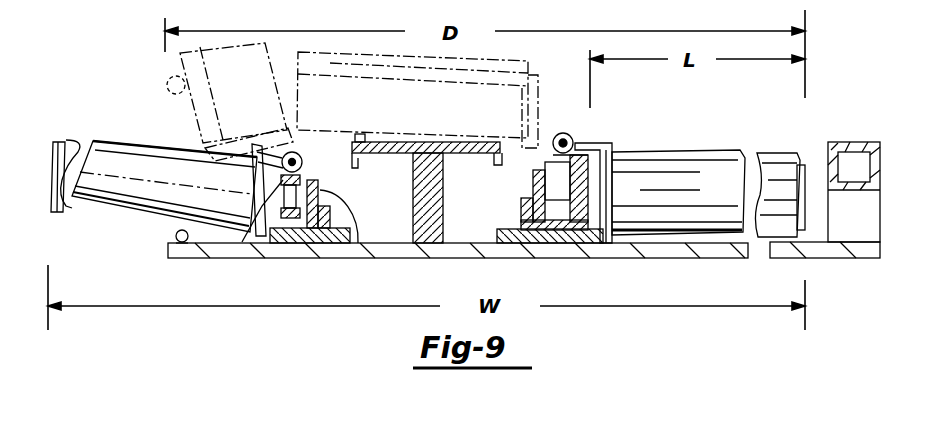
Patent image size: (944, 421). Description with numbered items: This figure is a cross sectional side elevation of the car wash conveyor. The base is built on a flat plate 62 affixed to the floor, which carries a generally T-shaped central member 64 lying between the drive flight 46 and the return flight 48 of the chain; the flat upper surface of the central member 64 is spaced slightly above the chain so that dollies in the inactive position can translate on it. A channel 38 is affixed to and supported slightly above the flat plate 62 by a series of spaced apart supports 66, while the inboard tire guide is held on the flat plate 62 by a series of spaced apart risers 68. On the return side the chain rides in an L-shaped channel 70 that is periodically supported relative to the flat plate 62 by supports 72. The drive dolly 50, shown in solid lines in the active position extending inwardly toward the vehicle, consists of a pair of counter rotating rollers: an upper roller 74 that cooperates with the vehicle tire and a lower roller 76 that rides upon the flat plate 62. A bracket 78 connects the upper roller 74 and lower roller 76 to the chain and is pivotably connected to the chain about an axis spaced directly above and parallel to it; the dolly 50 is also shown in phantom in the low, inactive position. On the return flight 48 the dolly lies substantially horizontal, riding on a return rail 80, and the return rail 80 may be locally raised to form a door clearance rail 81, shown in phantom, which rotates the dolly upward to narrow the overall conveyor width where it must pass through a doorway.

The channel 38 is at (603, 245).
The drive flight 46 is at (574, 245).
The return flight 48 is at (258, 248).
The drive dolly 50 is at (143, 144).
The flat plate 62 is at (676, 250).
The T-shaped central member 64 is at (413, 220).
The spaced apart supports 66 is at (532, 240).
The riser 68 is at (848, 232).
The L-shaped channel 70 is at (354, 257).
The support 72 is at (316, 258).
The upper roller 74 is at (190, 150).
The lower roller 76 is at (126, 210).
The bracket 78 is at (245, 240).
The return rail 80 is at (170, 242).
The door clearance rail 81 is at (167, 83).